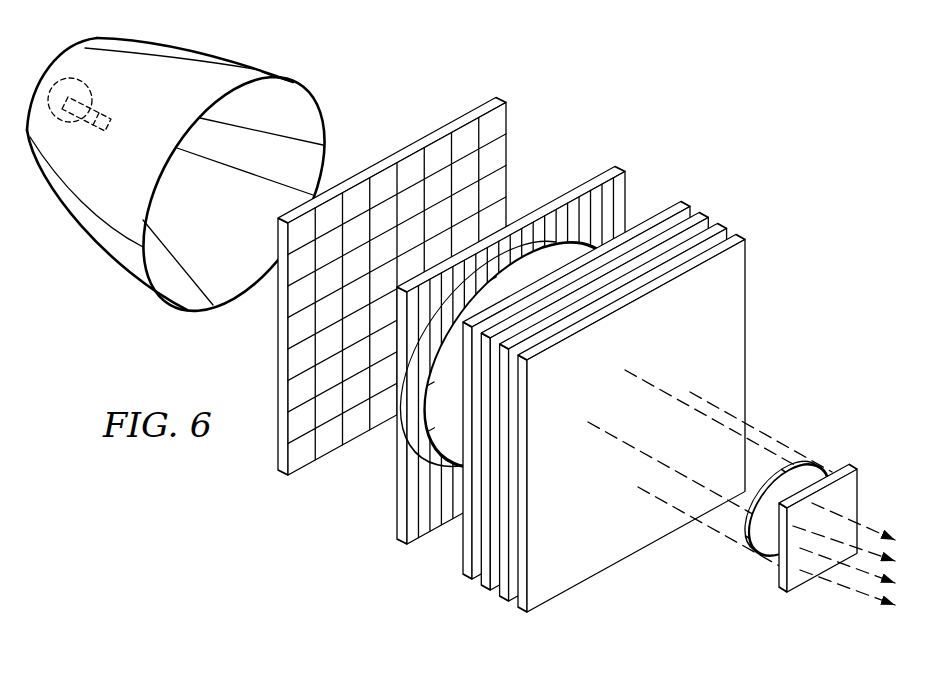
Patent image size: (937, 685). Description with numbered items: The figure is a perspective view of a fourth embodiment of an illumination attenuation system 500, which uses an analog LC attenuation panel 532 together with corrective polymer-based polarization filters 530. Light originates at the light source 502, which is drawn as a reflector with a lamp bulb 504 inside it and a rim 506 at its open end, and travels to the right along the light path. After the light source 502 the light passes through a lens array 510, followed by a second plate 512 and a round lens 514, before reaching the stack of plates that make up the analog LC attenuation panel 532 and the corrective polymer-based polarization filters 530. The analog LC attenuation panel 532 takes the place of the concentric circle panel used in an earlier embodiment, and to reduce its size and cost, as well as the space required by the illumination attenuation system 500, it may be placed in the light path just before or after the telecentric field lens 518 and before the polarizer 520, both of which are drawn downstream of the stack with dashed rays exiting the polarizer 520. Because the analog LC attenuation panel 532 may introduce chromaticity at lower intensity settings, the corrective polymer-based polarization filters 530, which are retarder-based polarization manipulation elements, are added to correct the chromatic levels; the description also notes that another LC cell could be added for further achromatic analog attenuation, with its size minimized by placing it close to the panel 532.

The illumination attenuation system 500 is at (596, 75).
The light source 502 is at (194, 190).
The lamp bulb 504 is at (121, 98).
The reflector rim 506 is at (287, 92).
The lens array 510 is at (498, 100).
The second integrator slat plate 512 is at (622, 167).
The lens 514 is at (440, 457).
The telecentric field lens 518 is at (803, 467).
The polarizer 520 is at (780, 588).
The corrective polymer-based polarization filters 530 is at (617, 400).
The analog LC attenuation panel 532 is at (737, 293).